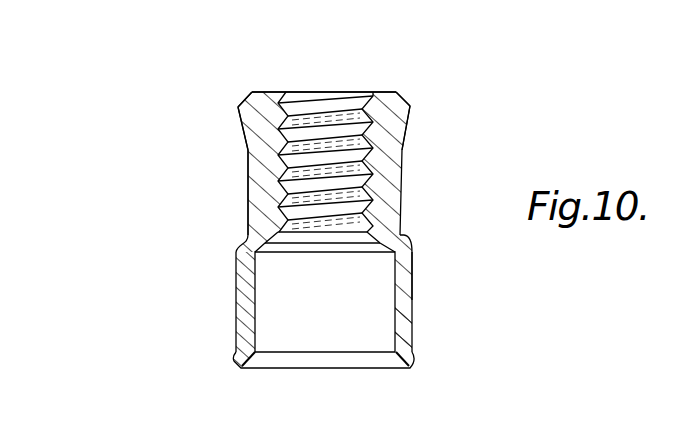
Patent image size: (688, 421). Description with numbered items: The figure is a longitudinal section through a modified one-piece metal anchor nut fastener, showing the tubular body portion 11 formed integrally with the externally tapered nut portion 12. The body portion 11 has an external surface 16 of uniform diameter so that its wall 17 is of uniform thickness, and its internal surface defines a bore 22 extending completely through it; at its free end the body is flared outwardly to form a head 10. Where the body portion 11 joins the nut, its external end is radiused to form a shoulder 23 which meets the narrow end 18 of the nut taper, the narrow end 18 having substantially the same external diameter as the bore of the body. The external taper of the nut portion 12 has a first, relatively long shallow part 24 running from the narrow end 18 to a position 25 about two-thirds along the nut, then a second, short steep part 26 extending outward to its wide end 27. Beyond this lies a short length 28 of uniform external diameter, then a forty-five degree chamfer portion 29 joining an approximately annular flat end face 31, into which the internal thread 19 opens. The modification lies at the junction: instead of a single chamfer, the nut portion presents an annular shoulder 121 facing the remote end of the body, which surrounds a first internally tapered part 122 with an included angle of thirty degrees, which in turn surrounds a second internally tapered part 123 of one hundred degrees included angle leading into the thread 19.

The head 10 is at (234, 360).
The tubular body portion 11 is at (236, 328).
The nut portion 12 is at (249, 186).
The external surface 16 is at (413, 265).
The wall 17 is at (406, 322).
The narrow end 18 is at (400, 236).
The internal thread 19 is at (350, 188).
The bore 22 is at (274, 318).
The shoulder 23 is at (238, 243).
The first taper part 24 is at (248, 208).
The wide end of shallow taper 25 is at (248, 154).
The second taper part 26 is at (247, 136).
The wide end of steep taper 27 is at (240, 125).
The uniform diameter part 28 is at (408, 113).
The chamfer portion 29 is at (403, 101).
The end face 31 is at (381, 92).
The annular shoulder 121 is at (260, 253).
The first internally tapered part 122 is at (376, 253).
The second internally tapered part 123 is at (366, 238).